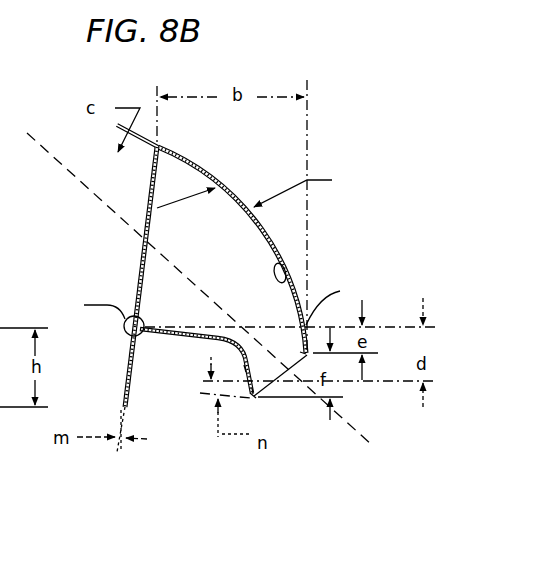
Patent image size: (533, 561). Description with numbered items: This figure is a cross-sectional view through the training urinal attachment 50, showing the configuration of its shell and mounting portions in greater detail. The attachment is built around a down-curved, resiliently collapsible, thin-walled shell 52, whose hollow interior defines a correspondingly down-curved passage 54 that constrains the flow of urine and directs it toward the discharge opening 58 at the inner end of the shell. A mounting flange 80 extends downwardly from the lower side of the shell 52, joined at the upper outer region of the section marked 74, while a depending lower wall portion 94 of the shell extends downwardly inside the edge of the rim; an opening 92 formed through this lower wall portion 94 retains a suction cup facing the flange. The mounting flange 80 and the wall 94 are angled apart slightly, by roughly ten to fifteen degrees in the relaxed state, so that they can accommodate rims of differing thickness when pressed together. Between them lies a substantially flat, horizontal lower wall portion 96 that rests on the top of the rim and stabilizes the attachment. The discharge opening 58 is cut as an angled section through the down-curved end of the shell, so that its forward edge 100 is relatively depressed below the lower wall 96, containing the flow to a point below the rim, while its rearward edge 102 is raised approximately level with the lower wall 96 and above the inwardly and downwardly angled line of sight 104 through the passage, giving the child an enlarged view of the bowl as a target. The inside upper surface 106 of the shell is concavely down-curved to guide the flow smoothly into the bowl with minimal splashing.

The training urinal attachment 50 is at (350, 134).
The shell 52 is at (281, 240).
The down-curved passage 54 is at (163, 250).
The discharge opening 58 is at (287, 373).
The upper joint 74 is at (160, 146).
The mounting flange 80 is at (130, 350).
The opening 92 is at (248, 380).
The depending lower wall portion 94 is at (242, 372).
The horizontal lower wall portion 96 is at (168, 338).
The forward edge 100 is at (260, 397).
The rearward edge 102 is at (300, 352).
The line of sight 104 is at (68, 177).
The inside upper surface 106 is at (302, 282).